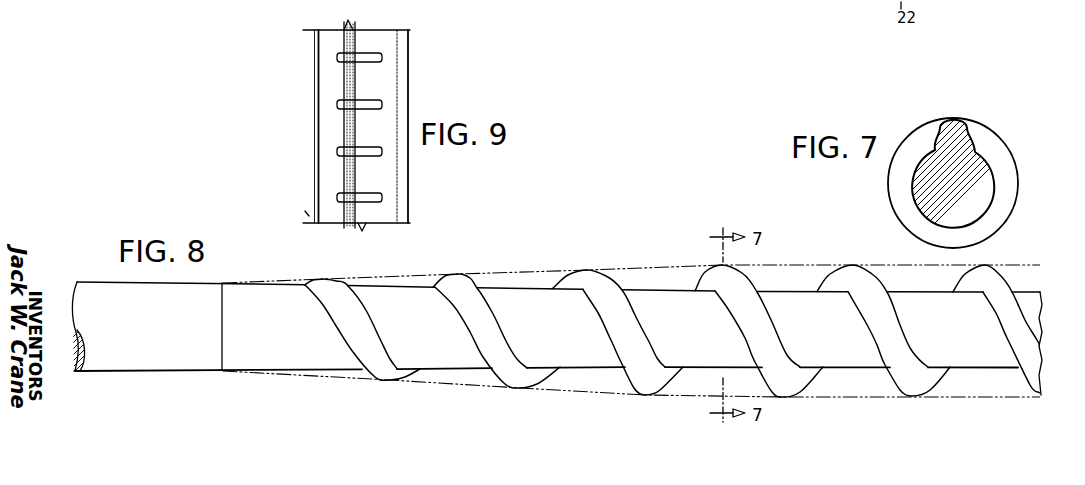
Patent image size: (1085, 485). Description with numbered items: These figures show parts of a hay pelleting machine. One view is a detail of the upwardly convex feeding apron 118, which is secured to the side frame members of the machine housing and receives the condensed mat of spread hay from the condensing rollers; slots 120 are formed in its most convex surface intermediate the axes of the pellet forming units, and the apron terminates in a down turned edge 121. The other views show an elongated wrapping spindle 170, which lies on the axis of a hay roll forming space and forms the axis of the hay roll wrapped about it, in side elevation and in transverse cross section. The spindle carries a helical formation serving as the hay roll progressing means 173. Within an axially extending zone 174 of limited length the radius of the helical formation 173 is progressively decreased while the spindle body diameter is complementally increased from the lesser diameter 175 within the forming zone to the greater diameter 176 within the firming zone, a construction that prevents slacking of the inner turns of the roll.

In FIG. 9, the feeding apron 118 is at (409, 76).
In FIG. 9, the slots 120 is at (339, 58).
In FIG. 9, the down turned edge 121 is at (318, 131).
In FIG. 7, the wrapping spindle 170 is at (995, 178).
In FIG. 8, the wrapping spindle 170 is at (641, 286).
In FIG. 7, the hay roll progressing means 173 is at (910, 219).
In FIG. 8, the hay roll progressing means 173 is at (864, 272).
In FIG. 8, the axially extending zone 174 is at (610, 291).
In FIG. 8, the lesser diameter 175 is at (807, 292).
In FIG. 8, the greater diameter 176 is at (198, 283).